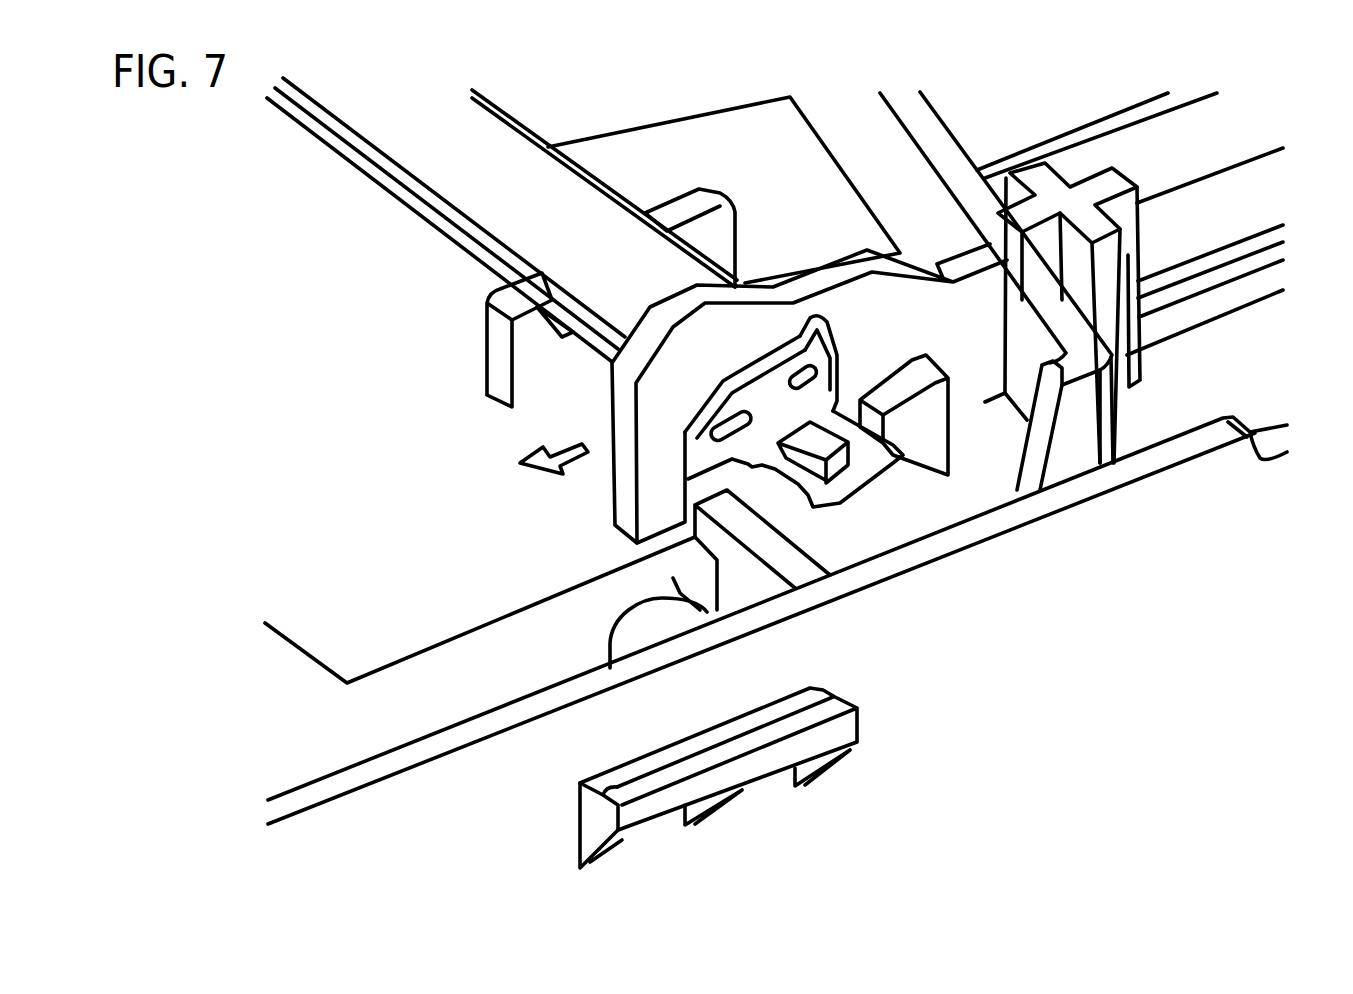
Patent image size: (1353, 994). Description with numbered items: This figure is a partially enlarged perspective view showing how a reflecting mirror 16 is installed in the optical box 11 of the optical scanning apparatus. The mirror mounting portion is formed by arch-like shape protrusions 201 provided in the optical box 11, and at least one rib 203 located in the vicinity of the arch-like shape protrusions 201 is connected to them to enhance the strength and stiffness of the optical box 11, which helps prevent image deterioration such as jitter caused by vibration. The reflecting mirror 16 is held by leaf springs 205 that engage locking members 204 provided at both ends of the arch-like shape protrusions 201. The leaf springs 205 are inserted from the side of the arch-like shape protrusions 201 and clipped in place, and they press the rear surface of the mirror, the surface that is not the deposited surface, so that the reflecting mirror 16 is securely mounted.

The optical box 11 is at (1087, 488).
The reflecting mirror 16 is at (512, 130).
The arch-like shape protrusions 201 is at (753, 314).
The rib 203 is at (953, 132).
The locking members 204 is at (825, 455).
The leaf springs 205 is at (853, 473).